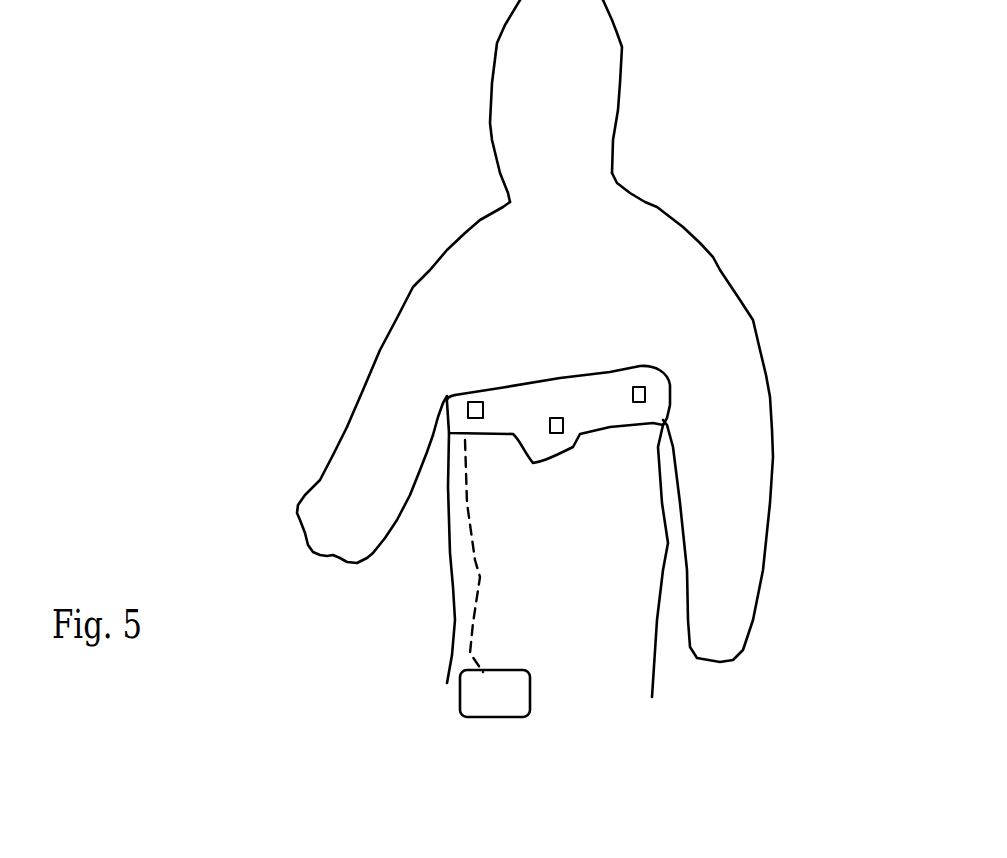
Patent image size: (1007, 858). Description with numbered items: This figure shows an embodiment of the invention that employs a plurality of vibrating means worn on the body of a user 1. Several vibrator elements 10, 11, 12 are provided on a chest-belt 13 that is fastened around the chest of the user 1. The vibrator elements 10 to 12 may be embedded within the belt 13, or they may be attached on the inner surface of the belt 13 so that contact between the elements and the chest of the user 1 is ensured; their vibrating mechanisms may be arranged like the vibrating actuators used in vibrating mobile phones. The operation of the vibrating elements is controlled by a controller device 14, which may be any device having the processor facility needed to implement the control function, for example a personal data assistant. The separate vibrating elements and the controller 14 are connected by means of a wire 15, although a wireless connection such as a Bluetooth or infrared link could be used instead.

The user 1 is at (510, 153).
The vibrator element 10 is at (480, 408).
The vibrator element 11 is at (646, 390).
The vibrator element 12 is at (551, 420).
The chest-belt 13 is at (603, 387).
The controller device 14 is at (470, 688).
The wire 15 is at (472, 557).